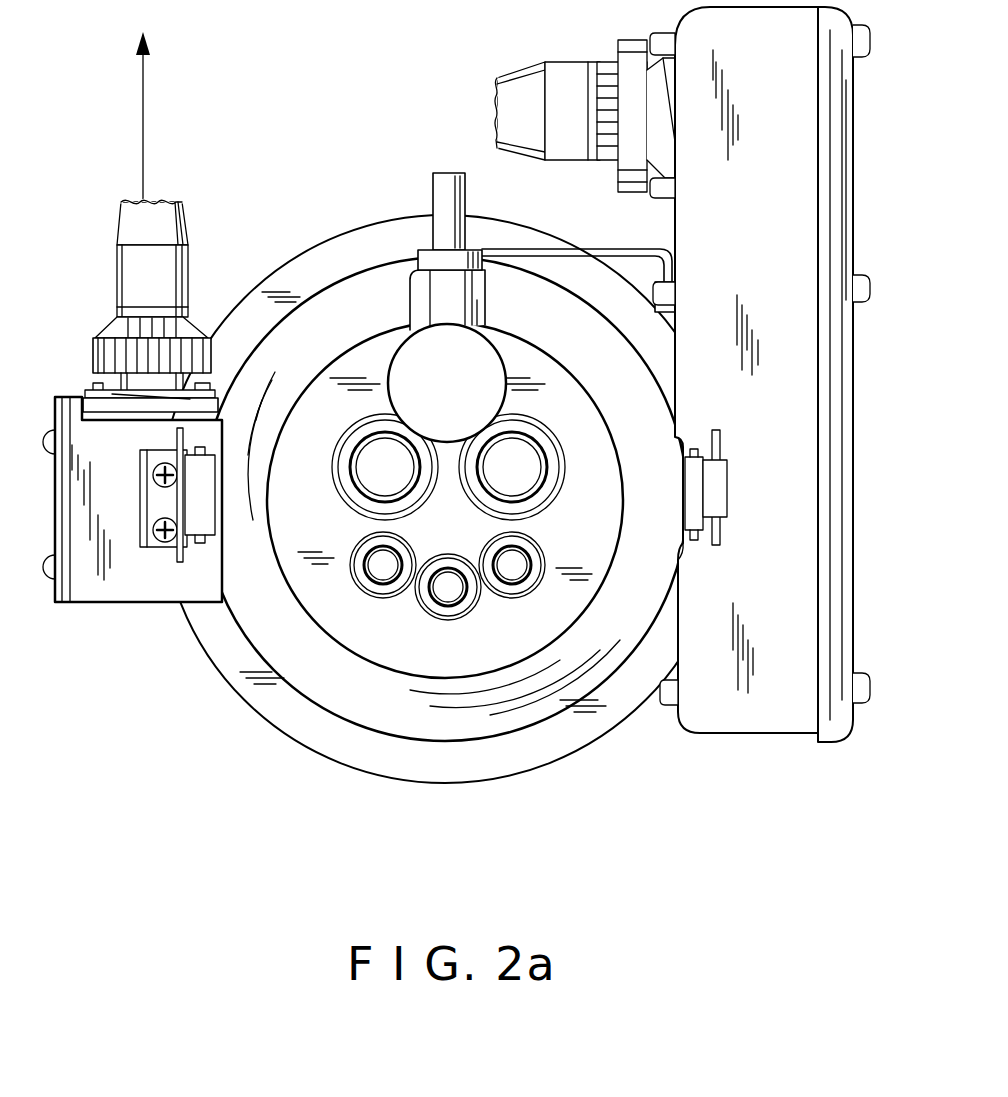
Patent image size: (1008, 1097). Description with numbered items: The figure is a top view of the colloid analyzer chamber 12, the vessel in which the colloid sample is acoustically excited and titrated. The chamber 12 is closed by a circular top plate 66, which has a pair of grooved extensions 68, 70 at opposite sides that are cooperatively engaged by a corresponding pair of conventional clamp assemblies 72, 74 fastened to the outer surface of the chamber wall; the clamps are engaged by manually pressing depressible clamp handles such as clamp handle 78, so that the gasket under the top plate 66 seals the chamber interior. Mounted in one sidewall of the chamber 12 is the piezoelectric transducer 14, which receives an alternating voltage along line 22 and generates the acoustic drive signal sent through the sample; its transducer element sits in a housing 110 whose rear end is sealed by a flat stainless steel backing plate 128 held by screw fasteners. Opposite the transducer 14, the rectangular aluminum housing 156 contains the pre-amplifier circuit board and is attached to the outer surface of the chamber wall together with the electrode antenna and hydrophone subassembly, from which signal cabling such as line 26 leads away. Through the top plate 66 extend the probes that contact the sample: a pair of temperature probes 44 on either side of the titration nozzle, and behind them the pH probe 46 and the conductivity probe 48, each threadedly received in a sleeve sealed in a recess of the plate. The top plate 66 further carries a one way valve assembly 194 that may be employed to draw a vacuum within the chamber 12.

The chamber 12 is at (265, 735).
The piezoelectric transducer 14 is at (68, 370).
The line 22 is at (143, 118).
The cable to control unit 26 is at (497, 110).
The temperature probes 44 is at (385, 580).
The pH probe 46 is at (540, 480).
The conductivity probe 48 is at (358, 490).
The top plate 66 is at (400, 712).
The grooved extension 68 is at (690, 538).
The grooved extension 70 is at (214, 544).
The clamp assembly 72 is at (692, 488).
The clamp assembly 74 is at (200, 506).
The depressible clamp handle 78 is at (177, 438).
The housing 110 is at (115, 584).
The backing plate 128 is at (55, 590).
The housing 156 is at (764, 276).
The one way valve assembly 194 is at (408, 296).